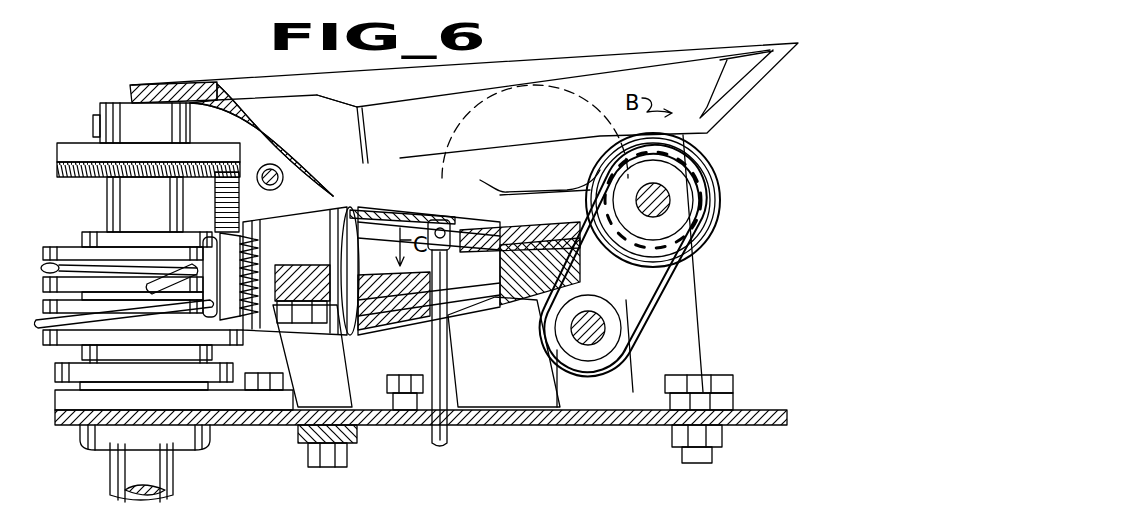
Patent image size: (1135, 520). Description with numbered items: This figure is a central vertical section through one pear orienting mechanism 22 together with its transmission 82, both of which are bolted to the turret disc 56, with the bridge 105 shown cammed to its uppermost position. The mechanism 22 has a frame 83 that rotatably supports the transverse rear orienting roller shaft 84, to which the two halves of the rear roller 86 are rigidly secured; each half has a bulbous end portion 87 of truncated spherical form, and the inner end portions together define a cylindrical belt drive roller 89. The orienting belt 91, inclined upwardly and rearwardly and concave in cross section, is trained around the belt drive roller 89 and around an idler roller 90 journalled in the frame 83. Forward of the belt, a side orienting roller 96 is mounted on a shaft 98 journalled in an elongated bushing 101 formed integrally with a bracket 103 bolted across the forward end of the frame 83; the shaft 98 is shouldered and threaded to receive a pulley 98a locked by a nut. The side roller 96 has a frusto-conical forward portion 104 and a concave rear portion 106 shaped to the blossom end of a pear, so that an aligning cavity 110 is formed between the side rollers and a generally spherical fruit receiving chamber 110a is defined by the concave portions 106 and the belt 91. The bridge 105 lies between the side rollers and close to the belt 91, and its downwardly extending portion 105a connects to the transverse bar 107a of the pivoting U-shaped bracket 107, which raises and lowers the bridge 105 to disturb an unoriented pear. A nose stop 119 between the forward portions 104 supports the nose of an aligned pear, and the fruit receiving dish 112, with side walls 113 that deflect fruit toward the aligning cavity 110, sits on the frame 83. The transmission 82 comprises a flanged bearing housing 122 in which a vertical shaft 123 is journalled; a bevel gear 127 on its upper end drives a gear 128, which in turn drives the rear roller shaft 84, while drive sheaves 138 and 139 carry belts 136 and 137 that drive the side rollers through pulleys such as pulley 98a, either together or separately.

The orienting mechanism 22 is at (516, 60).
The turret disc 56 is at (255, 414).
The transmission 82 is at (91, 130).
The frame 83 is at (688, 362).
The rear orienting roller shaft 84 is at (663, 200).
The rear roller 86 is at (734, 182).
The bulbous end portion 87 is at (710, 158).
The belt drive roller 89 is at (672, 218).
The idler roller 90 is at (607, 338).
The orienting belt 91 is at (640, 325).
The side orienting roller 96 is at (370, 200).
The shaft 98 is at (203, 293).
The pulley 98a is at (248, 307).
The bushing 101 is at (325, 255).
The bracket 103 is at (303, 300).
The frusto-conical forward portion 104 is at (377, 330).
The bridge 105 is at (547, 220).
The downwardly extending portion 105a is at (523, 298).
The concave rear portion 106 is at (585, 168).
The U-shaped bracket 107 is at (458, 355).
The transverse bar 107a is at (472, 342).
The aligning cavity 110 is at (409, 206).
The fruit receiving chamber 110a is at (510, 181).
The dish 112 is at (306, 80).
The side wall 113 is at (692, 92).
The nose stop 119 is at (322, 188).
The flanged bearing housing 122 is at (153, 387).
The shaft 123 is at (160, 470).
The bevel gear 127 is at (72, 158).
The gear 128 is at (214, 193).
The belt 136 is at (130, 318).
The belt 137 is at (42, 265).
The drive sheave 138 is at (238, 345).
The drive sheave 139 is at (93, 257).